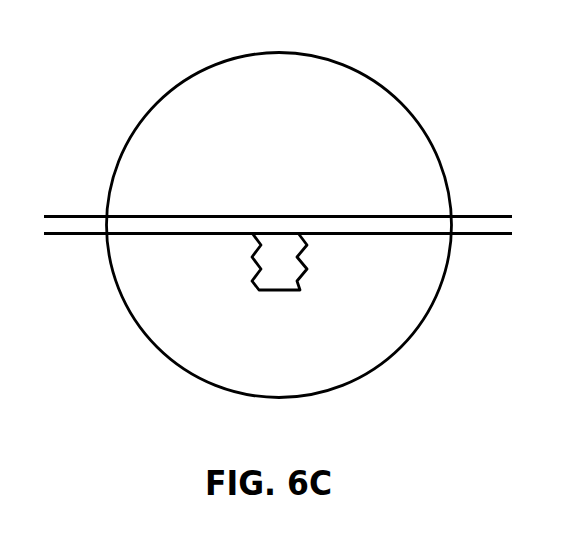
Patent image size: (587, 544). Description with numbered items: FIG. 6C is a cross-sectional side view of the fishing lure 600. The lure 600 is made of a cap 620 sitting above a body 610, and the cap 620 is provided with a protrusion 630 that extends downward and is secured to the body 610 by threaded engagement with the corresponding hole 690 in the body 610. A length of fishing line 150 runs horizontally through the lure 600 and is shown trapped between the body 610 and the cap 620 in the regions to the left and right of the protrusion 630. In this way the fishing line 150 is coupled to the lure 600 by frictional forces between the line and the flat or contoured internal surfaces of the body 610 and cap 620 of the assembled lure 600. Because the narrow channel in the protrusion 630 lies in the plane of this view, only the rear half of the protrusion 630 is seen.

The fishing lure 600 is at (142, 65).
The cap 620 is at (343, 95).
The fishing line 150 is at (484, 216).
The body 610 is at (412, 282).
The protrusion 630 is at (263, 268).
The hole 690 is at (290, 292).